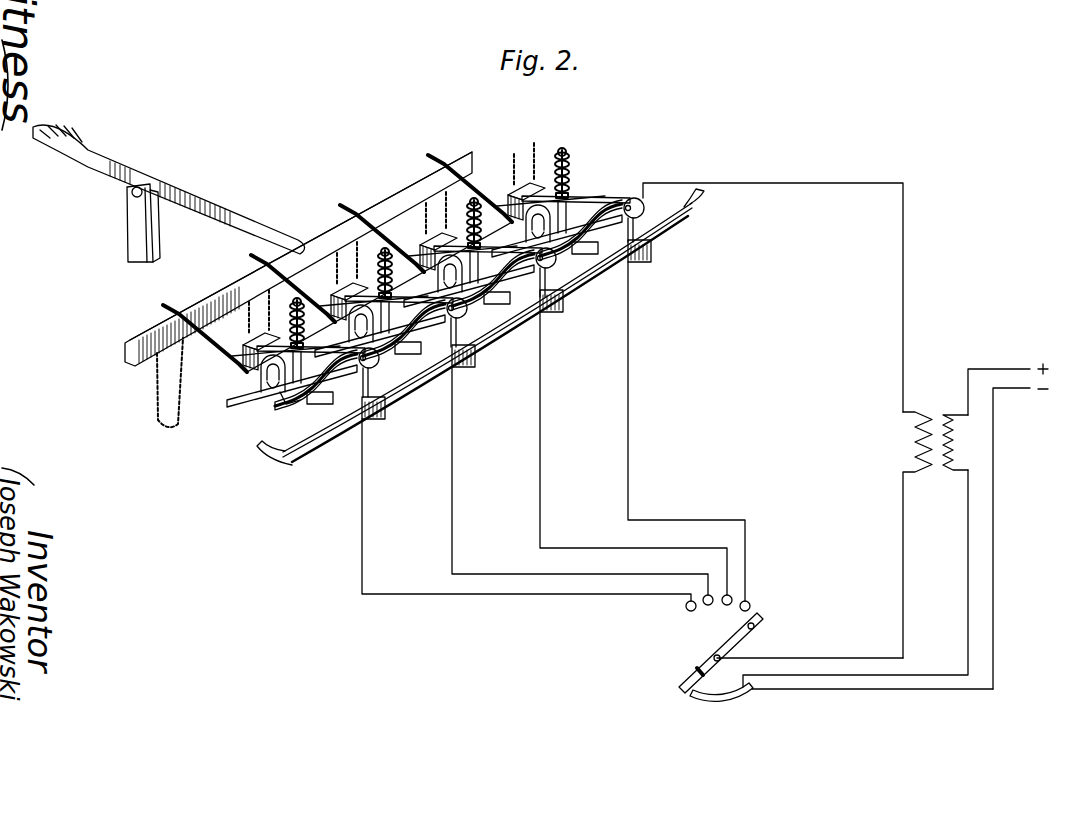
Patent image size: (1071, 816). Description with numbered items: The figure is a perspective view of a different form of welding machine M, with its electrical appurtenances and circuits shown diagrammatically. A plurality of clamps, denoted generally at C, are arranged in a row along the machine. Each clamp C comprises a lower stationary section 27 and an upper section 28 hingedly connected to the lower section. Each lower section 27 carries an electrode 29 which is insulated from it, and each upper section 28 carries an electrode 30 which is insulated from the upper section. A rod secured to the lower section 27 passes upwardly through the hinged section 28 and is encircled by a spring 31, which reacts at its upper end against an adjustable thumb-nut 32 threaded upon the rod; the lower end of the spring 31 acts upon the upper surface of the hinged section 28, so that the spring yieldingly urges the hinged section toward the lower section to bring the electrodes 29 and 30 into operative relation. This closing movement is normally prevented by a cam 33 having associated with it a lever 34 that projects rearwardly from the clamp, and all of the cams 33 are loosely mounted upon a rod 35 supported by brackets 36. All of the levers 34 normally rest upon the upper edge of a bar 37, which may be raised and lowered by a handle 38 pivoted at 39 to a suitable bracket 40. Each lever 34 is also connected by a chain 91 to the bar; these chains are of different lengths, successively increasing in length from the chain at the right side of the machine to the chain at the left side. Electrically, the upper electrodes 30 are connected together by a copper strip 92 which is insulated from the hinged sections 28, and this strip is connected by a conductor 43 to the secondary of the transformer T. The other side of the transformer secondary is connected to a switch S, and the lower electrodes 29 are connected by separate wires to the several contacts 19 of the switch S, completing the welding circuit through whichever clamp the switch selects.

The switch contacts 19 is at (742, 612).
The lower stationary section 27 is at (308, 403).
The upper section 28 is at (243, 372).
The electrode 29 is at (356, 432).
The electrode 30 is at (392, 388).
The spring 31 is at (300, 300).
The adjustable thumb-nut 32 is at (303, 304).
The cam 33 is at (246, 372).
The lever 34 is at (167, 303).
The rod 35 is at (286, 406).
The brackets 36 is at (262, 394).
The beam 37 is at (224, 290).
The handle 38 is at (100, 166).
The pivot 39 is at (131, 194).
The bracket 40 is at (127, 240).
The conductor 43 is at (903, 297).
The chain 91 is at (156, 392).
The pivot lobe 92 is at (634, 198).
The clamps C is at (426, 275).
The rail tip M is at (703, 214).
The switch S is at (830, 657).
The transformer T is at (895, 526).